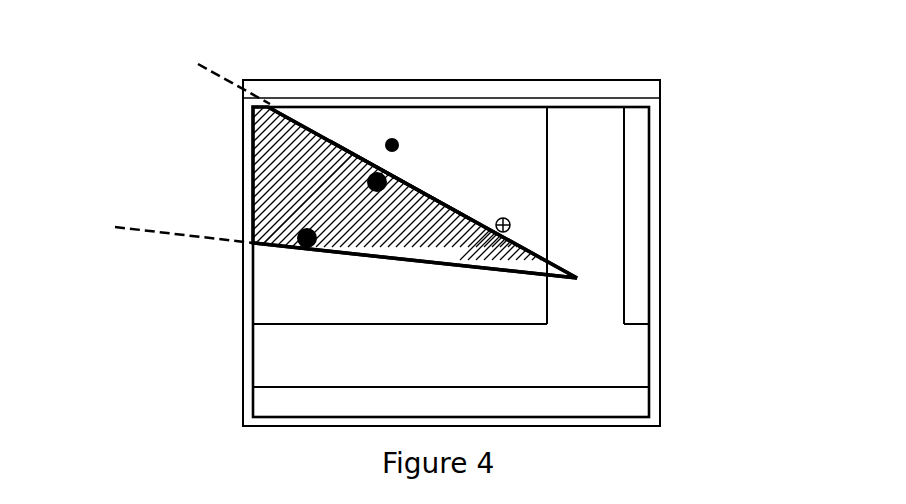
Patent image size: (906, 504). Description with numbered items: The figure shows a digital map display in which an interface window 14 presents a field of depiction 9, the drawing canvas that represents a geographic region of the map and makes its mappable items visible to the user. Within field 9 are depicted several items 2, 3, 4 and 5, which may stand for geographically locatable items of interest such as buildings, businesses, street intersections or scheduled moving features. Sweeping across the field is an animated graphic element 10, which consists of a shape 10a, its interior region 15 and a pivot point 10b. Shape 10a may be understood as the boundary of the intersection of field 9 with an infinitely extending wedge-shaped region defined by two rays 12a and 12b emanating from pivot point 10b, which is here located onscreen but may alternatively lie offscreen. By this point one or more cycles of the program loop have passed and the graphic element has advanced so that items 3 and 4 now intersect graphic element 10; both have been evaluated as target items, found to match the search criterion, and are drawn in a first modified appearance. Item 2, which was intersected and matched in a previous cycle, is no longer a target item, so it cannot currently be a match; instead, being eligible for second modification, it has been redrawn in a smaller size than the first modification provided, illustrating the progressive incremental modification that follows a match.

The item 2 is at (386, 146).
The item 3 is at (370, 183).
The item 4 is at (300, 240).
The item 5 is at (490, 228).
The field of depiction 9 is at (650, 130).
The animated graphic element 10 is at (422, 187).
The shape 10a is at (503, 225).
The pivot point 10b is at (578, 278).
The ray 12a is at (162, 232).
The ray 12b is at (227, 77).
The interface window 14 is at (660, 168).
The interior region 15 is at (392, 203).